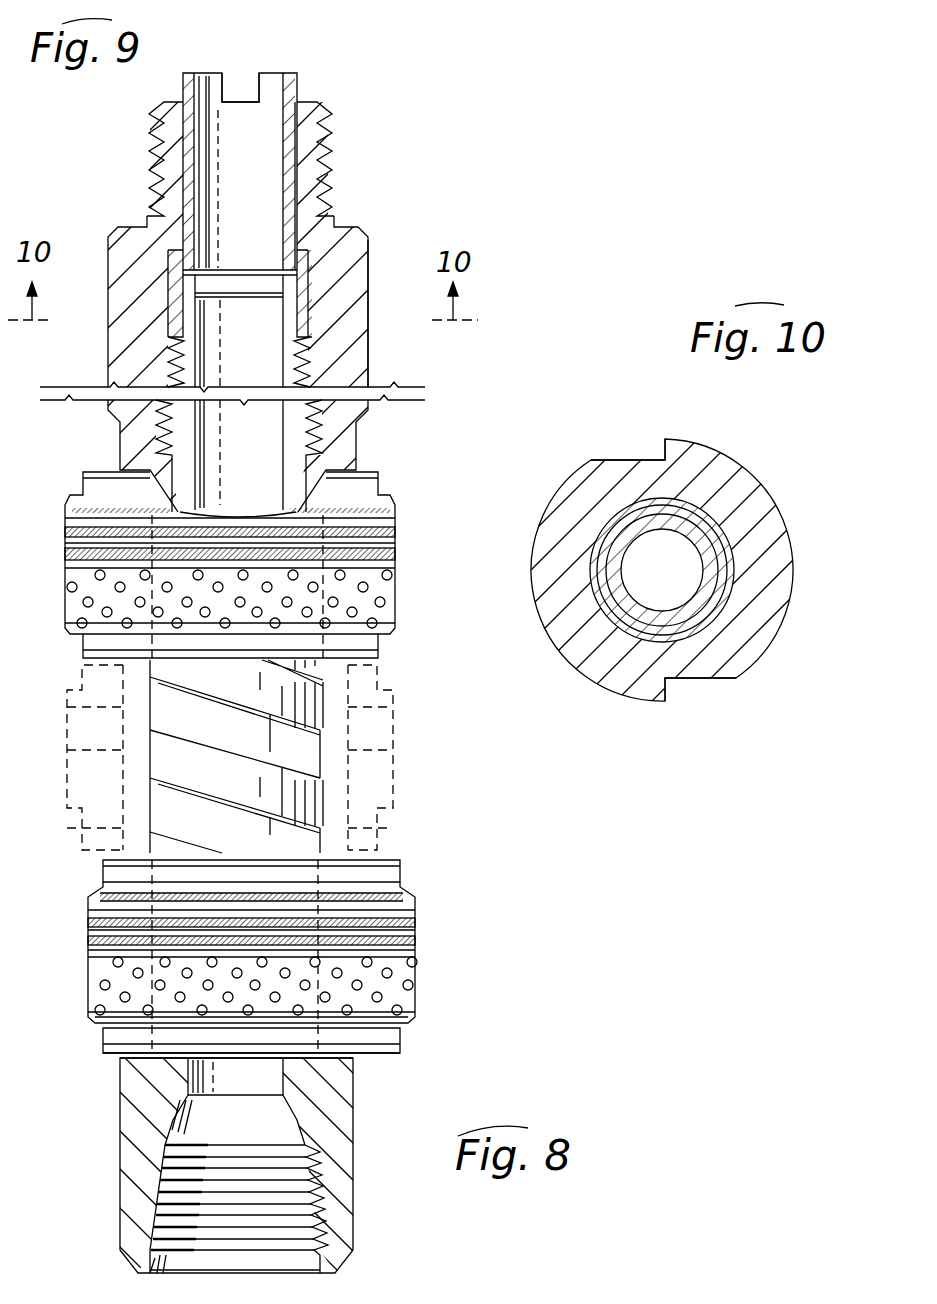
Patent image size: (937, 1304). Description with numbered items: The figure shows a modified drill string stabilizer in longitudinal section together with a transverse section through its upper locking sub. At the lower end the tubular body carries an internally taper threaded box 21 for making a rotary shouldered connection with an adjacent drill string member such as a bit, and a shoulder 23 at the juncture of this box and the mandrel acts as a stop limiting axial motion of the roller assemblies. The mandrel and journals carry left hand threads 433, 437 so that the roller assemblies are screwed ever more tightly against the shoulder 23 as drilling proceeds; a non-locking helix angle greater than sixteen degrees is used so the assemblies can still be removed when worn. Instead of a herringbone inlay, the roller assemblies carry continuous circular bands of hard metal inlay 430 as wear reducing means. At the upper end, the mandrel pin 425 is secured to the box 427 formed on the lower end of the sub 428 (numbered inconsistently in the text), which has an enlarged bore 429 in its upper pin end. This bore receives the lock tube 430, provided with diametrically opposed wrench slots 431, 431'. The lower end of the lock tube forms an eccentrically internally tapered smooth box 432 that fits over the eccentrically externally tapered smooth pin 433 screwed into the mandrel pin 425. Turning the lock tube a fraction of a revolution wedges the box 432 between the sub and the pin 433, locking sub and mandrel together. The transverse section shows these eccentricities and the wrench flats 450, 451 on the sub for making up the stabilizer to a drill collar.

In FIG. 8, the internally taper threaded box 21 is at (130, 1198).
In FIG. 8, the shoulder 23 is at (135, 1063).
In FIG. 9, the mandrel pin 425 is at (300, 426).
In FIG. 9, the box 427 is at (368, 372).
In FIG. 10, the box 427 is at (782, 508).
In FIG. 9, the body 428 is at (368, 252).
In FIG. 10, the body 428 is at (760, 645).
In FIG. 9, the enlarged bore 429 is at (298, 209).
In FIG. 9, the lock tube 430 is at (395, 540).
In FIG. 9, the wrench slots 431 is at (307, 174).
In FIG. 9, the slot 431' is at (249, 64).
In FIG. 9, the eccentrically internally tapered smooth box 432 is at (300, 311).
In FIG. 10, the eccentrically internally tapered smooth box 432 is at (727, 552).
In FIG. 9, the eccentrically externally tapered smooth pin 433 is at (293, 326).
In FIG. 8, the eccentrically externally tapered smooth pin 433 is at (325, 742).
In FIG. 10, the eccentrically externally tapered smooth pin 433 is at (716, 580).
In FIG. 8, the left hand thread 437 is at (308, 800).
In FIG. 10, the wrench flat 450 is at (695, 686).
In FIG. 10, the wrench flat 451 is at (640, 460).